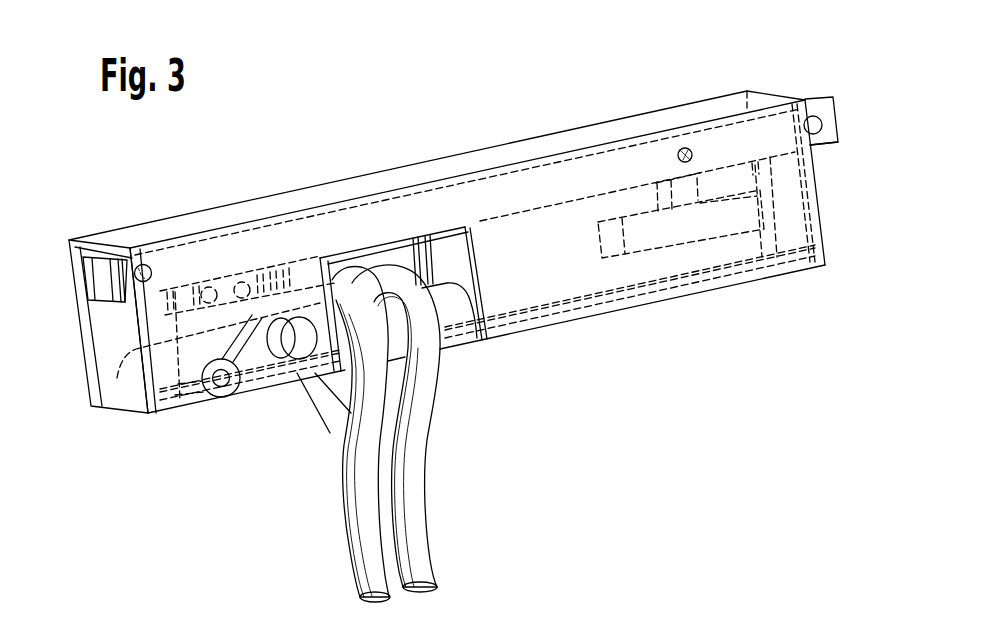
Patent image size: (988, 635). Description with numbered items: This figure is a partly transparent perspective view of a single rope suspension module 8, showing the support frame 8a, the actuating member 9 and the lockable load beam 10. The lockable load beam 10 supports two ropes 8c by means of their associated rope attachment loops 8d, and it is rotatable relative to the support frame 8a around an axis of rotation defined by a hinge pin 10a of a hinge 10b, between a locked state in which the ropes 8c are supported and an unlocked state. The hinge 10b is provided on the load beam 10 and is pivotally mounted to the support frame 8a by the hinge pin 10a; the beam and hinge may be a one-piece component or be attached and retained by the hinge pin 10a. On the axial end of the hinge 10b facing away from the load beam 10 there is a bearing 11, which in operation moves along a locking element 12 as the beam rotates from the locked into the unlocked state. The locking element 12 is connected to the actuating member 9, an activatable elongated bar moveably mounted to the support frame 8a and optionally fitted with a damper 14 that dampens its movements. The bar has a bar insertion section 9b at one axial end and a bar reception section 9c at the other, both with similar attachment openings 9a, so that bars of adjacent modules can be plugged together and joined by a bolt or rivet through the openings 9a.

The rope suspension module 8 is at (172, 196).
The support frame 8a is at (796, 258).
The ropes 8c is at (452, 553).
The rope attachment loops 8d is at (335, 412).
The actuating member 9 is at (828, 99).
The attachment openings 9a is at (823, 126).
The bar insertion section 9b is at (828, 140).
The bar reception section 9c is at (103, 277).
The lockable load beam 10 is at (448, 330).
The hinge pin 10a is at (293, 340).
The hinge 10b is at (240, 397).
The bearing 11 is at (180, 400).
The locking element 12 is at (117, 378).
The damper 14 is at (718, 226).